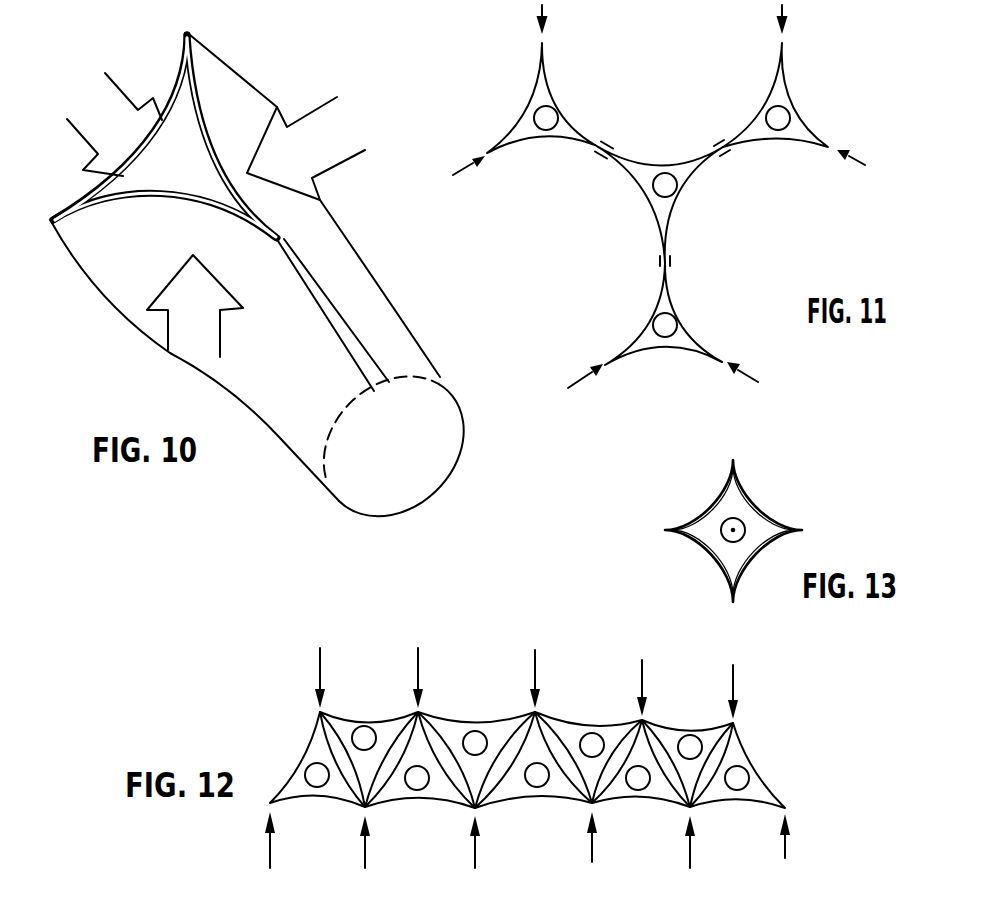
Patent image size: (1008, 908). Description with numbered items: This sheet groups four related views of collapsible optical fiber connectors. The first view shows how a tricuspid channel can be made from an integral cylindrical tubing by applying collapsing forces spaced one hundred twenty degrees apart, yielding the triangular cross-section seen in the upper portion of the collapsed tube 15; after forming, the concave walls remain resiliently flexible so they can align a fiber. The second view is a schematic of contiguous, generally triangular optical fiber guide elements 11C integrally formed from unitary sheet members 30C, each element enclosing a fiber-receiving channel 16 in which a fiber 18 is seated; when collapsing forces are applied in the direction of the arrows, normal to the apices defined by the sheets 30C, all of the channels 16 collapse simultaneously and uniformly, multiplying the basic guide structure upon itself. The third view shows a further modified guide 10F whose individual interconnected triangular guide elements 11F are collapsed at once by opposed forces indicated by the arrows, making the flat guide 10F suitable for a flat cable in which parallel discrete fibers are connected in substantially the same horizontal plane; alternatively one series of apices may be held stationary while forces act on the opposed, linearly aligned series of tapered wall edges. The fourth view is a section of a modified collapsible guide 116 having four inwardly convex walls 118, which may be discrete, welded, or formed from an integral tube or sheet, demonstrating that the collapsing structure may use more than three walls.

In FIG. 10, the collapsed tube 15 is at (308, 100).
In FIG. 11, the triangular optical fiber guide element 11C is at (555, 86).
In FIG. 11, the unitary sheet member 30C is at (643, 163).
In FIG. 11, the fiber-receiving channel 16 is at (782, 92).
In FIG. 11, the tube within cell 18 is at (773, 112).
In FIG. 13, the modified collapsible guide 116 is at (693, 486).
In FIG. 13, the inwardly convex wall 118 is at (745, 495).
In FIG. 12, the modified guide 10F is at (527, 750).
In FIG. 12, the interconnected triangular guide element 11F is at (320, 801).